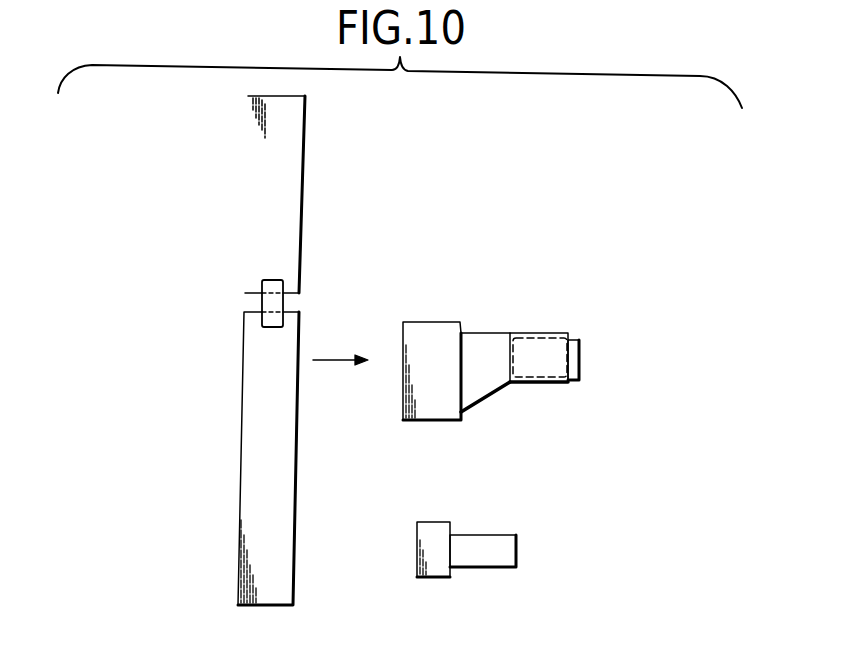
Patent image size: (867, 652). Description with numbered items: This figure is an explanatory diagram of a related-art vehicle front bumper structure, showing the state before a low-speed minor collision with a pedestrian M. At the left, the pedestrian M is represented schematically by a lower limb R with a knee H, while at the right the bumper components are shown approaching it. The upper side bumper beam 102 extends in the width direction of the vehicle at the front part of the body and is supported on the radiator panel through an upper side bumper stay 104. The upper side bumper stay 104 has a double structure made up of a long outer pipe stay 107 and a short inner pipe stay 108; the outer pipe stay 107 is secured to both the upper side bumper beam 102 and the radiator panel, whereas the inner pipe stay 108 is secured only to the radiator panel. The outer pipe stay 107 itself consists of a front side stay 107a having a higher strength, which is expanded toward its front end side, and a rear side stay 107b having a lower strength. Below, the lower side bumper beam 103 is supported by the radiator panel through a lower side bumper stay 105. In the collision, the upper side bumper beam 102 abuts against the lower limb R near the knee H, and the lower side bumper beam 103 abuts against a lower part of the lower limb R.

The pedestrian M is at (176, 260).
The knee H is at (262, 297).
The lower limb R is at (239, 418).
The upper side bumper beam 102 is at (423, 337).
The lower side bumper beam 103 is at (432, 533).
The upper side bumper stay 104 is at (535, 306).
The lower side bumper stay 105 is at (487, 548).
The outer pipe stay 107 is at (511, 306).
The front side stay 107a is at (490, 347).
The rear side stay 107b is at (548, 335).
The inner pipe stay 108 is at (622, 353).